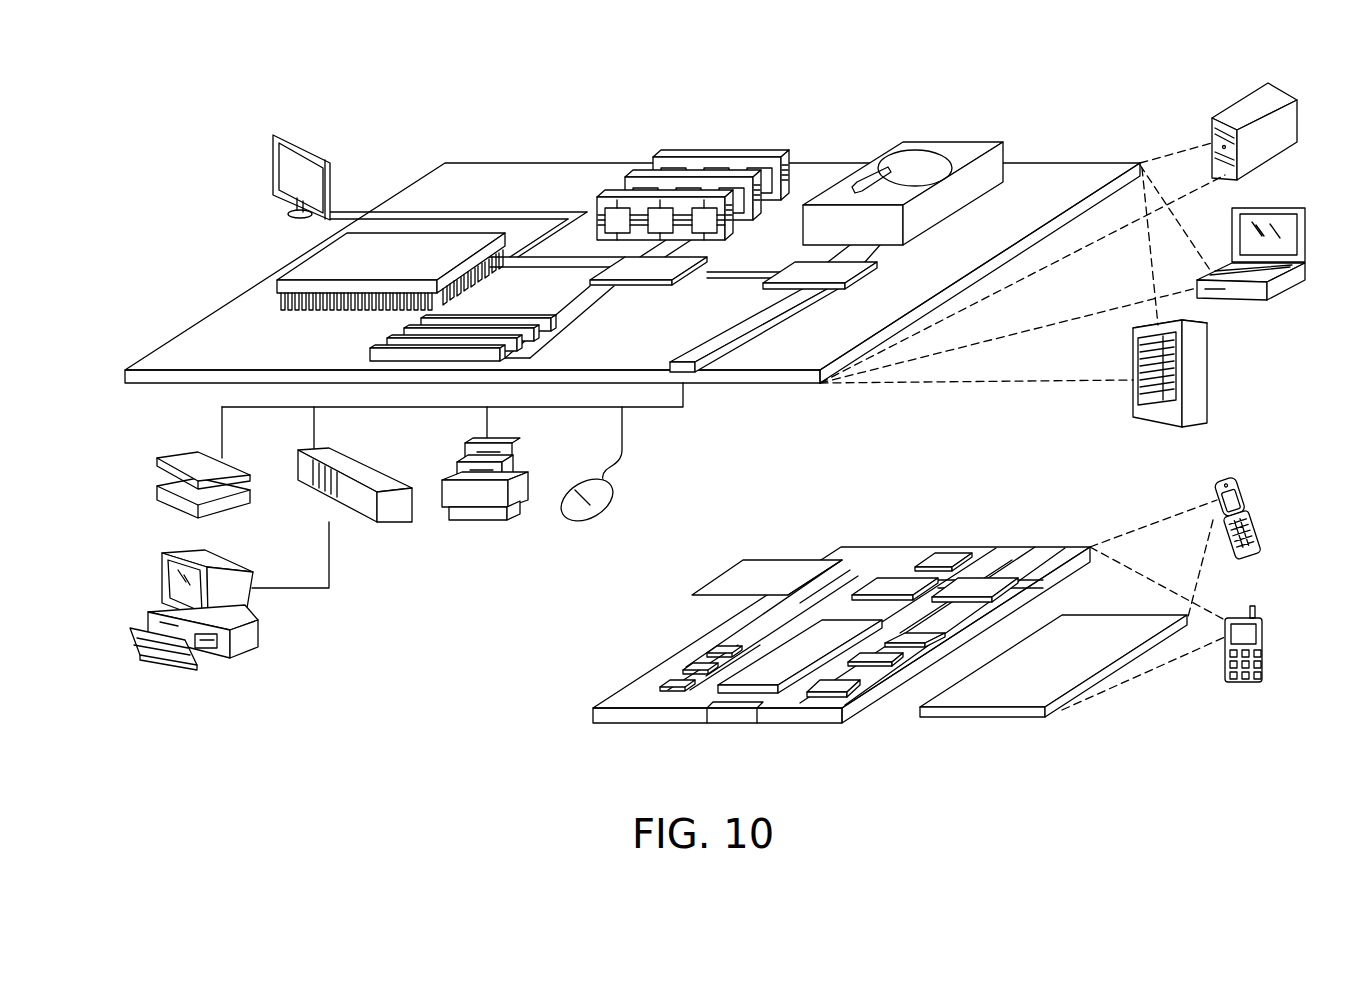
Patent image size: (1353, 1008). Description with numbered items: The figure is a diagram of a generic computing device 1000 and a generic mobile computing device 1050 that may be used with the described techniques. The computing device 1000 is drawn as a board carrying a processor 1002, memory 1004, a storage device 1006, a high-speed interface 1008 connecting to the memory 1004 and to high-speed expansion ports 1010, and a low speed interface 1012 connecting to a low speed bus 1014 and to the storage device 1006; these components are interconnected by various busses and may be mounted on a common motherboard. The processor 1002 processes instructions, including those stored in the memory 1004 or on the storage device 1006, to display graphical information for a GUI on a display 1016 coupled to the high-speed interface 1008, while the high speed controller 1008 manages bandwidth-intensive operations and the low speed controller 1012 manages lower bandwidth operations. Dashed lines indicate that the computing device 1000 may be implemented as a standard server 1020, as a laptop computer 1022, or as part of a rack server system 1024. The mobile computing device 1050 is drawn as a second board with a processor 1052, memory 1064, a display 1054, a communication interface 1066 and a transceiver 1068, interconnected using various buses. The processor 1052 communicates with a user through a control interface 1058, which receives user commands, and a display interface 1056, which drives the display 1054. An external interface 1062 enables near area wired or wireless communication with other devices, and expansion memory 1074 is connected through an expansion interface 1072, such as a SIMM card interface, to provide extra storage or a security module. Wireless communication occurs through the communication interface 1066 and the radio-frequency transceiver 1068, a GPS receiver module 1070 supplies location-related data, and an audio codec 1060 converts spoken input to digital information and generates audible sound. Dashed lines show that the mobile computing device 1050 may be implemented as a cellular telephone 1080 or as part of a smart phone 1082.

The computing device 1000 is at (395, 108).
The processor 1002 is at (306, 258).
The memory 1004 is at (724, 156).
The storage device 1006 is at (944, 140).
The high-speed interface 1008 is at (661, 266).
The high-speed expansion ports 1010 is at (397, 336).
The low speed interface 1012 is at (795, 272).
The low speed bus 1014 is at (690, 357).
The display 1016 is at (280, 133).
The standard server 1020 is at (1232, 113).
The laptop computer 1022 is at (1282, 208).
The rack server system 1024 is at (1210, 372).
The mobile computing device 1050 is at (540, 740).
The processor 1052 is at (770, 663).
The display 1054 is at (1090, 630).
The display interface 1056 is at (853, 686).
The control interface 1058 is at (880, 660).
The audio codec 1060 is at (918, 633).
The external interface 1062 is at (736, 715).
The memory 1064 is at (690, 665).
The communication interface 1066 is at (897, 578).
The transceiver 1068 is at (982, 579).
The GPS receiver module 1070 is at (945, 557).
The expansion interface 1072 is at (827, 557).
The expansion memory 1074 is at (743, 560).
The cellular telephone 1080 is at (1229, 477).
The smart phone 1082 is at (1238, 617).